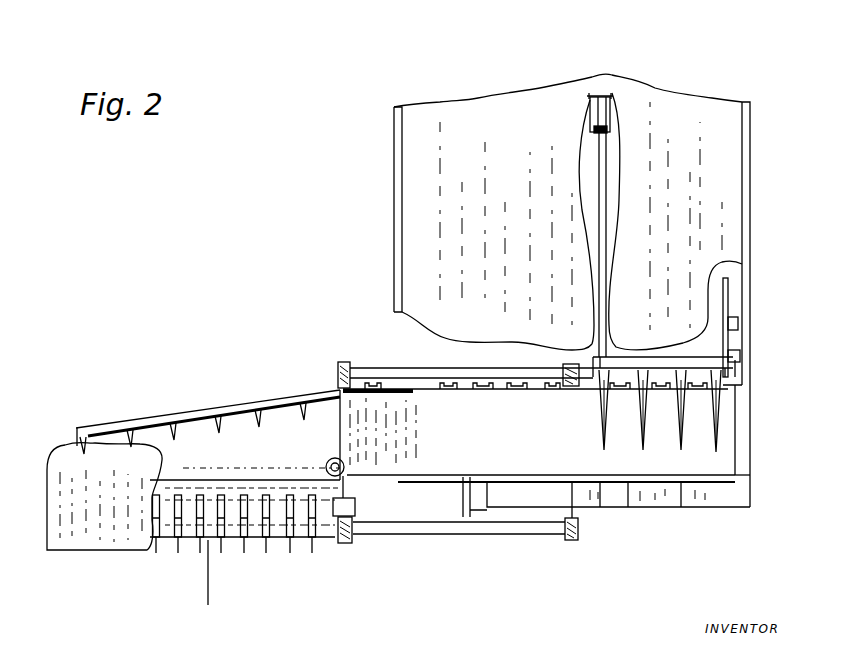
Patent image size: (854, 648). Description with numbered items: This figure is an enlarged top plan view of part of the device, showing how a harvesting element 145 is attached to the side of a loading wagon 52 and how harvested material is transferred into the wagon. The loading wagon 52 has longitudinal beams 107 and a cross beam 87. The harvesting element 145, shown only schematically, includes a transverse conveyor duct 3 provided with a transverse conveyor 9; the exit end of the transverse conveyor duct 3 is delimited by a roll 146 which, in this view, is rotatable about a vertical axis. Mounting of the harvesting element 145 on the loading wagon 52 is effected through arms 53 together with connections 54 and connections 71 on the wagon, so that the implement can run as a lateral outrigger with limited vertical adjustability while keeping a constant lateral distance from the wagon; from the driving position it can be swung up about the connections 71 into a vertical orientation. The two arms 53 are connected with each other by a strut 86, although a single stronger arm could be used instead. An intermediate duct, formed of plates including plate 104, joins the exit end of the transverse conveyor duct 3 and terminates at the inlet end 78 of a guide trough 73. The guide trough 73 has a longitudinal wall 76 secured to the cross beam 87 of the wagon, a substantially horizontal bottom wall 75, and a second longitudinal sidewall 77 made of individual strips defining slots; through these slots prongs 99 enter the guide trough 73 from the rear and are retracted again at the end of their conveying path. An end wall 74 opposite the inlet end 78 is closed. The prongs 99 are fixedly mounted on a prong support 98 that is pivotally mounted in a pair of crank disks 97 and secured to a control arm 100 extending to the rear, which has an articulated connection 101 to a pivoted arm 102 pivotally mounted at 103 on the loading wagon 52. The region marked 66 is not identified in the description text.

The loading wagon 52 is at (366, 185).
The longitudinal beams 107 is at (396, 262).
The control arm 100 is at (600, 254).
The pivoted arm 102 is at (596, 112).
The pivot mounting 103 is at (608, 100).
The articulated connection 101 is at (595, 131).
The crank disks 97 is at (729, 293).
The prong support 98 is at (741, 352).
The end wall 74 is at (736, 432).
The second longitudinal sidewall 77 is at (478, 388).
The arms 53 is at (387, 370).
The connections 71 is at (341, 364).
The connections 54 is at (563, 367).
The plate 104 is at (374, 386).
The housing section 66 is at (368, 437).
The inlet end 78 is at (415, 486).
The bottom wall 75 is at (497, 445).
The strut 86 is at (468, 480).
The guide trough 73 is at (599, 475).
The longitudinal wall 76 is at (628, 480).
The prongs 99 is at (681, 480).
The cross beam 87 is at (717, 500).
The transverse conveyor 9 is at (191, 390).
The transverse conveyor duct 3 is at (248, 445).
The harvesting element 145 is at (164, 578).
The roll 146 is at (341, 484).